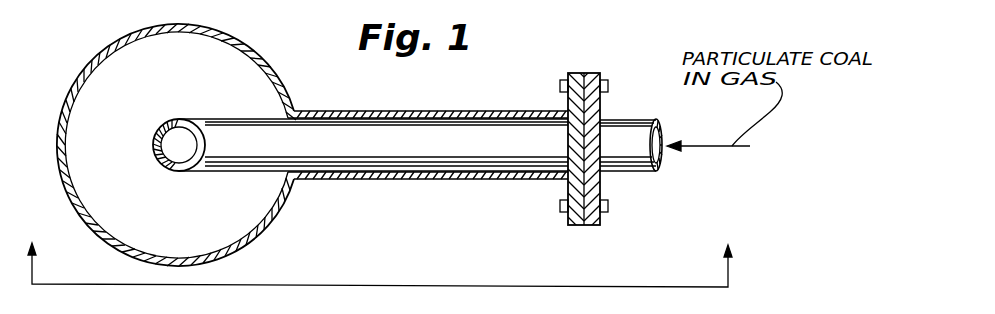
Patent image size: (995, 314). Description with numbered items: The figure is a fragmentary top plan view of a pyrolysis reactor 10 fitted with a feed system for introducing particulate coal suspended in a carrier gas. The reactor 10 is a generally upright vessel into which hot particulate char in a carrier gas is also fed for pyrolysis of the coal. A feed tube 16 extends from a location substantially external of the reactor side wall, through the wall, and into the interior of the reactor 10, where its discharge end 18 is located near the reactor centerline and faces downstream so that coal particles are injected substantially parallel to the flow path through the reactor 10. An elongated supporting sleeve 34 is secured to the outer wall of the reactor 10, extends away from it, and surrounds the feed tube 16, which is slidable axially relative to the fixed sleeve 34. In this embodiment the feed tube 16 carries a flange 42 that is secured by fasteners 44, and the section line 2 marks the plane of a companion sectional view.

The cyclone separator body 10 is at (262, 236).
The inner discharge tube 18 is at (176, 118).
The outer pipe 34 is at (352, 112).
The inlet tube 16 is at (395, 137).
The flange 42 is at (600, 103).
The bolt 44 is at (608, 207).
The section line 2- 2 is at (379, 254).